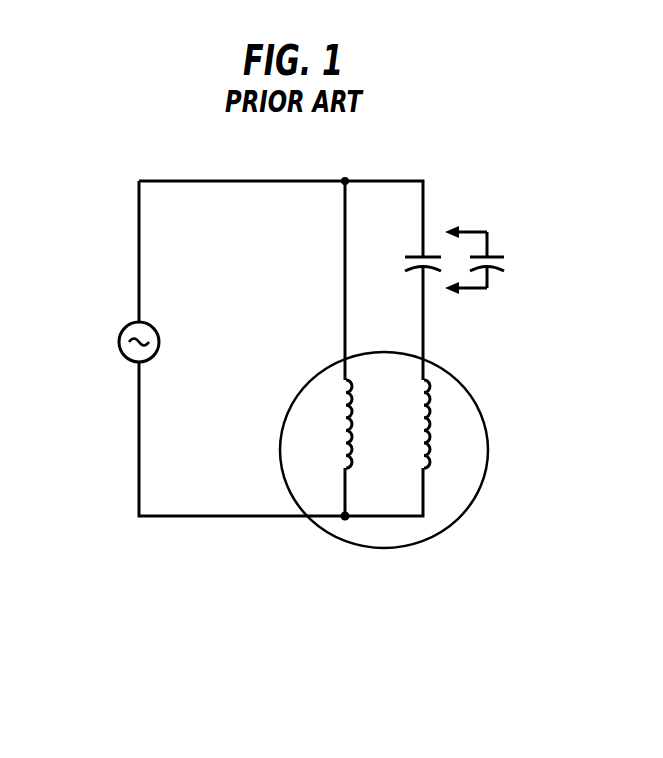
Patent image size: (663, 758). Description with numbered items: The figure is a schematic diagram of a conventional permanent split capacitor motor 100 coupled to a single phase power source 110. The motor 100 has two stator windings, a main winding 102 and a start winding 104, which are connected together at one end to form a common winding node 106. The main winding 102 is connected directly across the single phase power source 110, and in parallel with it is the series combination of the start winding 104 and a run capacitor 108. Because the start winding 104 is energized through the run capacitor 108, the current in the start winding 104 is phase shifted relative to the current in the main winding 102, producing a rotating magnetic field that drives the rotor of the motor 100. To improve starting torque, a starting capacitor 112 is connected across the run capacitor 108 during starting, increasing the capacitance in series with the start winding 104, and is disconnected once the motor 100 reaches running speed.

The PSC motor 100 is at (432, 532).
The main winding 102 is at (346, 420).
The start winding 104 is at (424, 420).
The common winding node 106 is at (345, 518).
The run capacitor 108 is at (418, 256).
The single phase power source 110 is at (121, 325).
The starting capacitor 112 is at (505, 256).